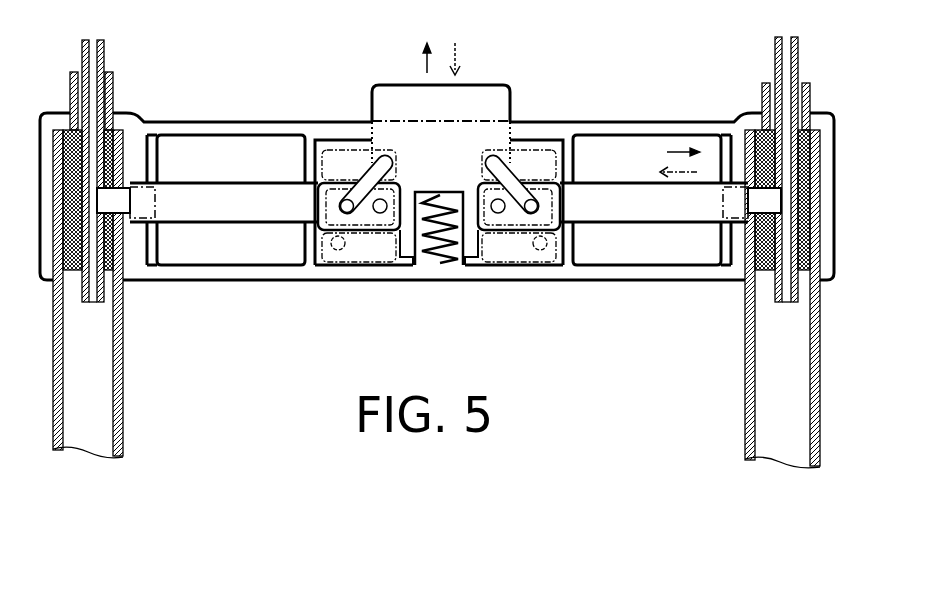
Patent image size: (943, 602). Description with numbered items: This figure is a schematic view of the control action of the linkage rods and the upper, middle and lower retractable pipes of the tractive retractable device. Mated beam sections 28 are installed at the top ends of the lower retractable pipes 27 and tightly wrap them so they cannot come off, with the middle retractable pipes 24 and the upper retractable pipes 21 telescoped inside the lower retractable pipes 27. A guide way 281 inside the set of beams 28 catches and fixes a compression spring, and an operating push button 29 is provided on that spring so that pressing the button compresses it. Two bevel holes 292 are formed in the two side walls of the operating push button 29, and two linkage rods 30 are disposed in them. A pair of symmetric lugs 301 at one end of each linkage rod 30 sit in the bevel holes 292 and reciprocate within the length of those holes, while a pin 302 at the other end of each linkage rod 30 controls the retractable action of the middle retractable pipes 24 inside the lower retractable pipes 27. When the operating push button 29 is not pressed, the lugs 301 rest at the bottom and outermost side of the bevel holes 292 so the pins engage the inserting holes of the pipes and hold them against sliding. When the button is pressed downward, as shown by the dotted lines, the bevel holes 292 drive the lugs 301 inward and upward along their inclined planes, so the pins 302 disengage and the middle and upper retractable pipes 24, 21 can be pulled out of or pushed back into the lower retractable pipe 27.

The upper retractable pipe 21 is at (104, 54).
The middle retractable pipe 24 is at (113, 88).
The lower retractable pipe 27 is at (123, 377).
The beam section 28 is at (248, 122).
The operating push button 29 is at (386, 85).
The linkage rod 30 is at (237, 218).
The guide way 281 is at (454, 267).
The bevel hole 292 is at (436, 136).
The lug 301 is at (350, 213).
The pin 302 is at (118, 199).